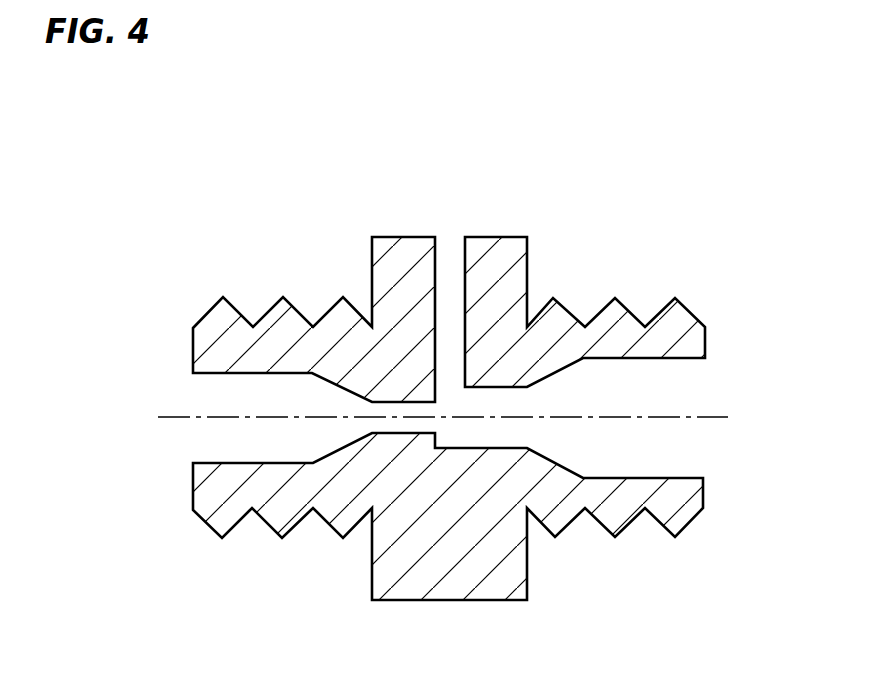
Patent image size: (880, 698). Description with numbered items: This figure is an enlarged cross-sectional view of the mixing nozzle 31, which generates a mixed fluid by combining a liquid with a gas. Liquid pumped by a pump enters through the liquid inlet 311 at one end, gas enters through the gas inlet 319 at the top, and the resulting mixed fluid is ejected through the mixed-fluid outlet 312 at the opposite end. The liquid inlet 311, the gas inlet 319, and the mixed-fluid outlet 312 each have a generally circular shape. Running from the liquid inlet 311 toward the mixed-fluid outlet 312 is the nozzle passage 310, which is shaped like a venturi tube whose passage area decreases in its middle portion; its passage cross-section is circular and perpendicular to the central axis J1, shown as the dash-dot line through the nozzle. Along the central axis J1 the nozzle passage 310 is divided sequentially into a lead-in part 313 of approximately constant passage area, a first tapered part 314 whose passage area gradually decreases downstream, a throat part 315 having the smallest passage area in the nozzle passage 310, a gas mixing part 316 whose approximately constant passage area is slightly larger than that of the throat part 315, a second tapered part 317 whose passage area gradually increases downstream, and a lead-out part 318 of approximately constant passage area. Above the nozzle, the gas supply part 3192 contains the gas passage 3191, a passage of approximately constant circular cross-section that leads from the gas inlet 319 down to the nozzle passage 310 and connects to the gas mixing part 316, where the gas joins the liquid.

The mixing nozzle 31 is at (197, 198).
The nozzle passage 310 is at (296, 390).
The liquid inlet 311 is at (189, 436).
The mixed-fluid outlet 312 is at (706, 436).
The lead-in part 313 is at (267, 482).
The first tapered part 314 is at (347, 471).
The throat part 315 is at (405, 452).
The gas mixing part 316 is at (460, 469).
The second tapered part 317 is at (563, 486).
The lead-out part 318 is at (642, 496).
The gas inlet 319 is at (454, 229).
The gas passage 3191 is at (434, 314).
The gas supply part 3192 is at (483, 288).
The central axis J1 is at (662, 417).